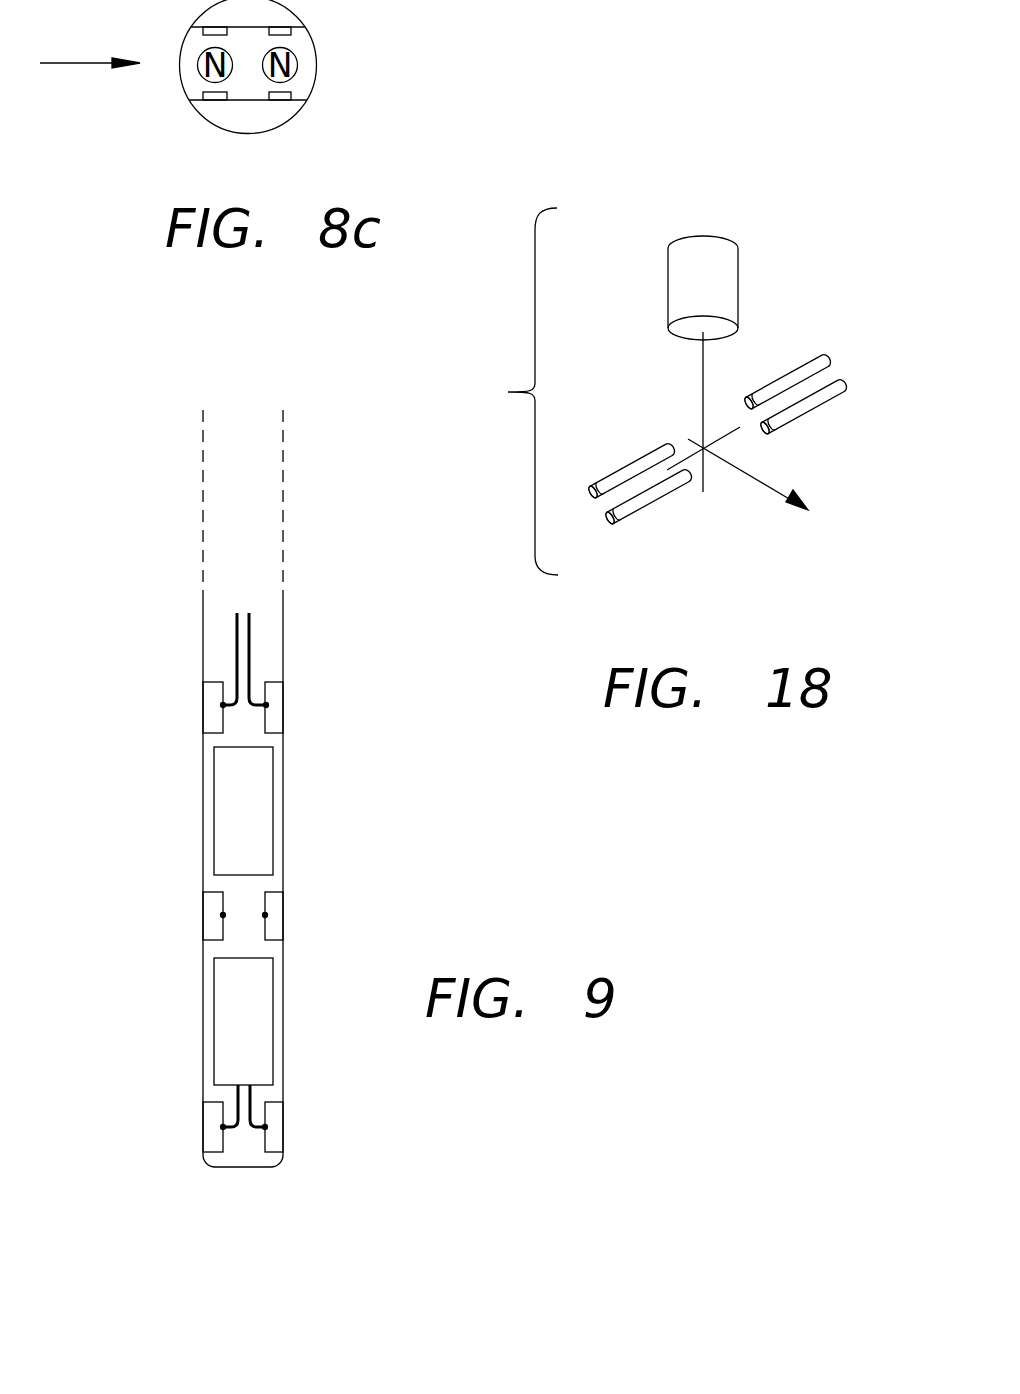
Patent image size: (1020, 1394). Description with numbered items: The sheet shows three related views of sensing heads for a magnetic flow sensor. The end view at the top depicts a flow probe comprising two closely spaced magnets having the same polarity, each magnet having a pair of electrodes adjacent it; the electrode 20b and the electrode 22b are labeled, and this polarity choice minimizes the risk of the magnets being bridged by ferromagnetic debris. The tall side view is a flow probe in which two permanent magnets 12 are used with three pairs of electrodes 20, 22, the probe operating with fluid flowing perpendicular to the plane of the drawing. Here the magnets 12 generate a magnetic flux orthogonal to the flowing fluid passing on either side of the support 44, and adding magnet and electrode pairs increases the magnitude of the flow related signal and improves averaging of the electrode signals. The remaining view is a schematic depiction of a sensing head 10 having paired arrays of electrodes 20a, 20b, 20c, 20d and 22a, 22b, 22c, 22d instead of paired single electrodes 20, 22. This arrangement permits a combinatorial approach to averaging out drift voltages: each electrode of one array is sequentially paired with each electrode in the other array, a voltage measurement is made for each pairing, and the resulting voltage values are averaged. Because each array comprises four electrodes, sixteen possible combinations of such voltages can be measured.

In FIG. 18, the sensing head 10 is at (633, 391).
In FIG. 9, the magnet 12 is at (214, 810).
In FIG. 9, the electrode 20 is at (203, 712).
In FIG. 9, the electrode 22 is at (283, 702).
In FIG. 9, the support 44 is at (250, 1167).
In FIG. 18, the electrode 20a is at (803, 367).
In FIG. 8C, the electrode 20b is at (291, 30).
In FIG. 18, the electrode 20b is at (752, 393).
In FIG. 18, the electrode 20c is at (767, 436).
In FIG. 18, the electrode 20d is at (814, 414).
In FIG. 18, the electrode 22a is at (643, 465).
In FIG. 8C, the electrode 22b is at (291, 94).
In FIG. 18, the electrode 22b is at (594, 484).
In FIG. 18, the electrode 22c is at (612, 527).
In FIG. 18, the electrode 22d is at (660, 497).